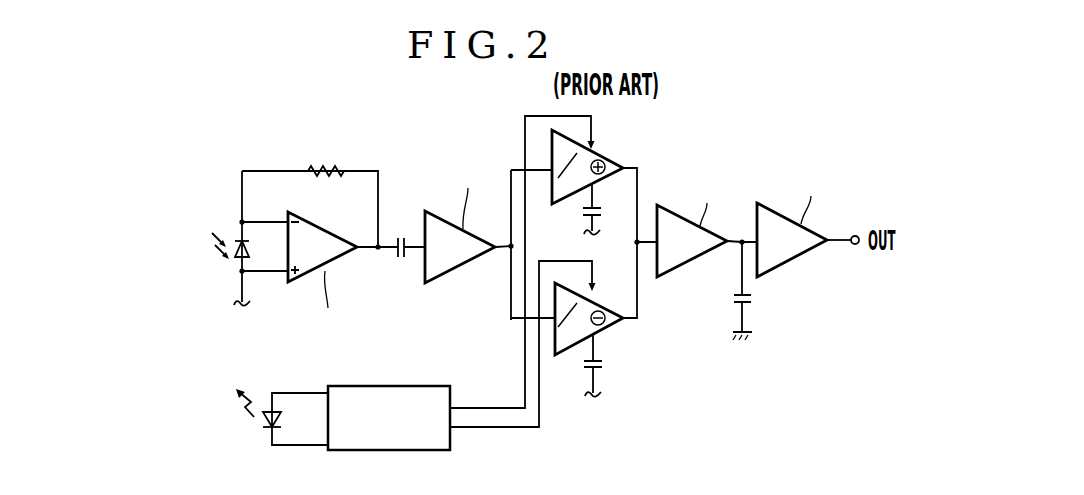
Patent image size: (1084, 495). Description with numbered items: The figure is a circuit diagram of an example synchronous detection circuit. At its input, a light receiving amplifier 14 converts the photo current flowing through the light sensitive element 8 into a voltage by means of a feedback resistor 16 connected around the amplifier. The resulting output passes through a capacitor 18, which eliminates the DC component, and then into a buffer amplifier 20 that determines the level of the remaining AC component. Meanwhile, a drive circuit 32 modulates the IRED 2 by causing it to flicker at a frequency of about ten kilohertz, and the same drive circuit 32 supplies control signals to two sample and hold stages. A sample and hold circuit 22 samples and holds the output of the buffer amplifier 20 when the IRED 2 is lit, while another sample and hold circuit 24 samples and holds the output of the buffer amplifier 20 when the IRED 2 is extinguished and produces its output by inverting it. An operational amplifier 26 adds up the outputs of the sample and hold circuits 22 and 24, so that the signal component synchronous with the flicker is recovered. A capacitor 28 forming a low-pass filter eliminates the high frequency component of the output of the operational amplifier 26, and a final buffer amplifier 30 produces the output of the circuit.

The IRED 2 is at (266, 410).
The light sensitive element 8 is at (238, 246).
The light receiving amplifier 14 is at (316, 259).
The feedback resistor 16 is at (311, 168).
The capacitor 18 is at (401, 259).
The buffer amplifier 20 is at (464, 262).
The sample and hold circuit 22 is at (601, 155).
The sample and hold circuit 24 is at (607, 286).
The operational amplifier 26 is at (686, 257).
The capacitor 28 is at (732, 299).
The buffer amplifier 30 is at (788, 256).
The drive circuit 32 is at (390, 386).